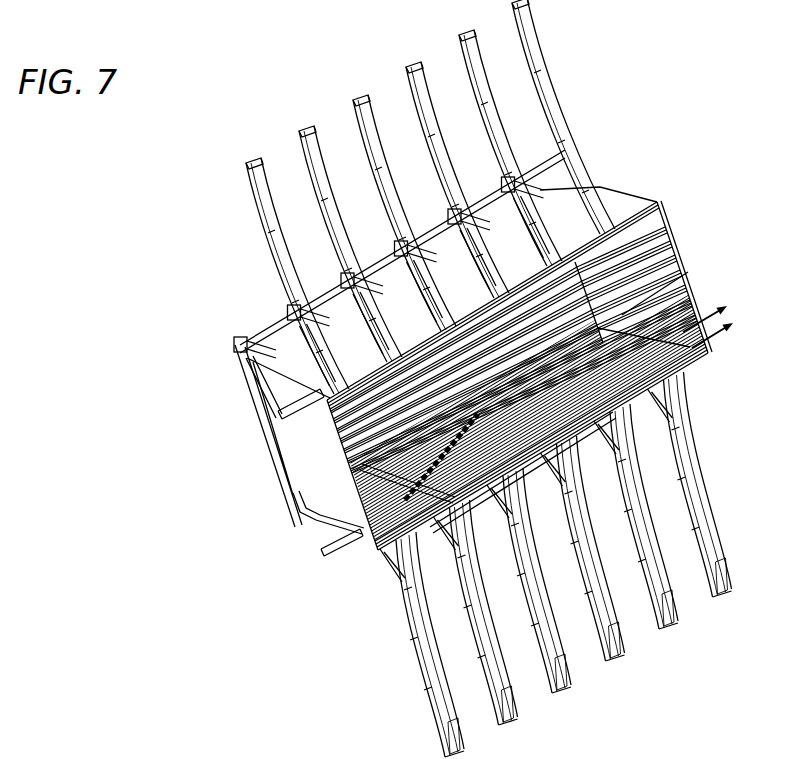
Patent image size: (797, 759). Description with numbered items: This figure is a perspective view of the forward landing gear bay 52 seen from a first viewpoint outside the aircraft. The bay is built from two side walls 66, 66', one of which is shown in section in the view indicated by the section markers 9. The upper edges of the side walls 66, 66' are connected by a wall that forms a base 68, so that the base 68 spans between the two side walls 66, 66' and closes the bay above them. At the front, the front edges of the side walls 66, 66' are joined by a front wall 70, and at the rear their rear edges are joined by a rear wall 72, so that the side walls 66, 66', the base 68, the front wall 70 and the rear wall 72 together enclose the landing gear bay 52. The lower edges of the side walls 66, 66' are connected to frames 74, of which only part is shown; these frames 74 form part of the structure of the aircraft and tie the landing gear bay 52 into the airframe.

The forward landing gear bay 52 is at (128, 222).
The frames 74 is at (353, 102).
The side wall 66 is at (581, 449).
The side wall 66' is at (447, 261).
The base 68 is at (640, 302).
The front wall 70 is at (318, 466).
The rear wall 72 is at (680, 258).
The section line 9- 9 is at (669, 313).